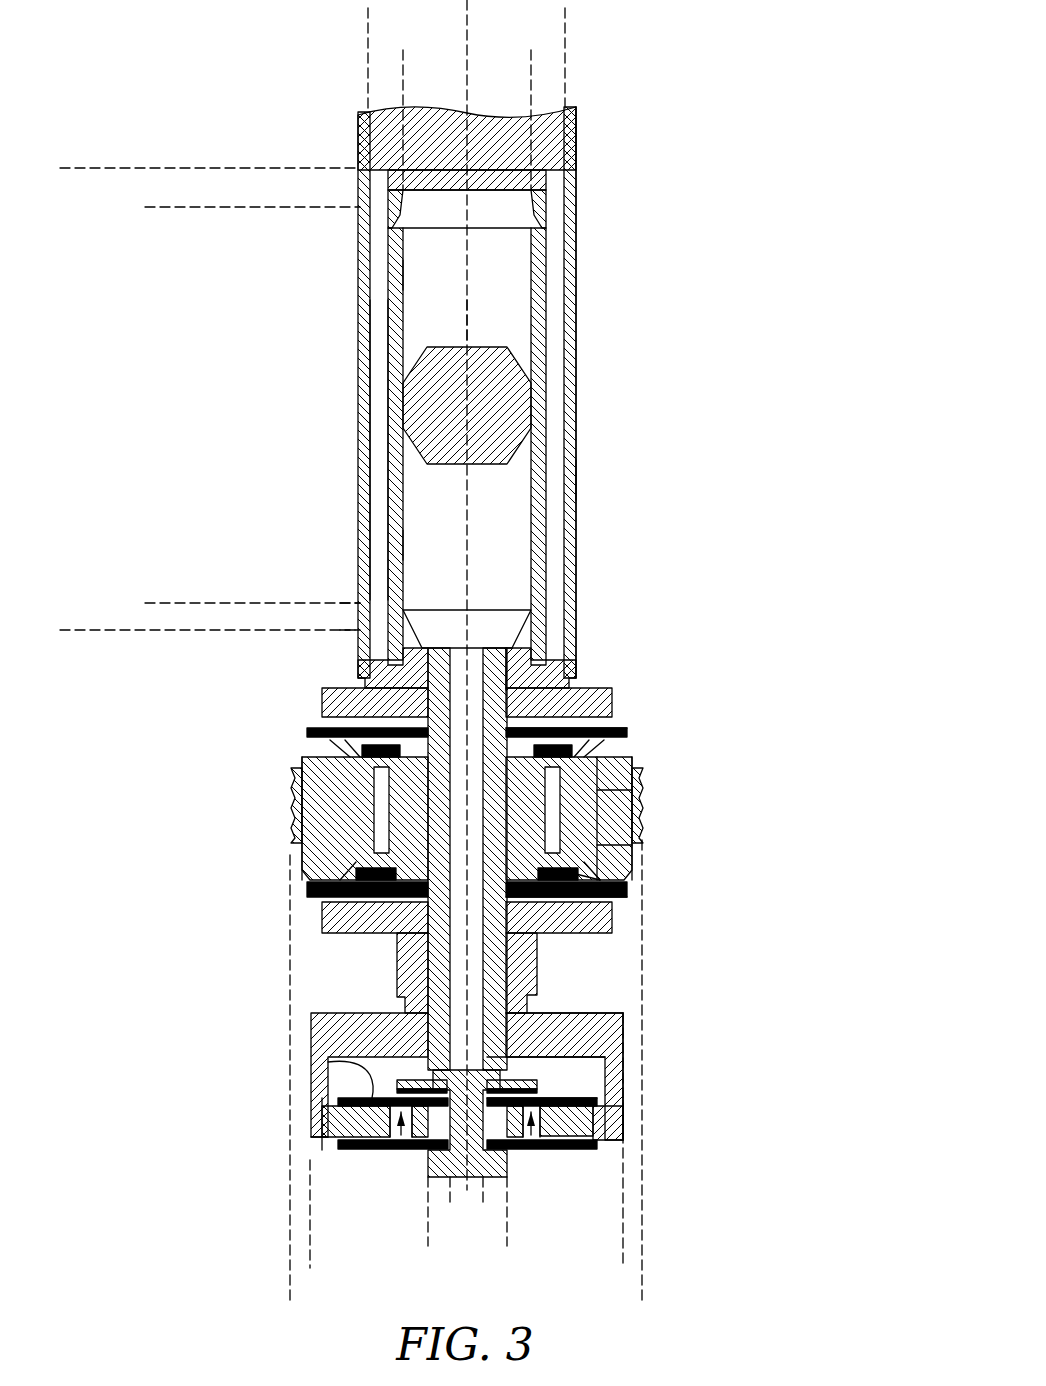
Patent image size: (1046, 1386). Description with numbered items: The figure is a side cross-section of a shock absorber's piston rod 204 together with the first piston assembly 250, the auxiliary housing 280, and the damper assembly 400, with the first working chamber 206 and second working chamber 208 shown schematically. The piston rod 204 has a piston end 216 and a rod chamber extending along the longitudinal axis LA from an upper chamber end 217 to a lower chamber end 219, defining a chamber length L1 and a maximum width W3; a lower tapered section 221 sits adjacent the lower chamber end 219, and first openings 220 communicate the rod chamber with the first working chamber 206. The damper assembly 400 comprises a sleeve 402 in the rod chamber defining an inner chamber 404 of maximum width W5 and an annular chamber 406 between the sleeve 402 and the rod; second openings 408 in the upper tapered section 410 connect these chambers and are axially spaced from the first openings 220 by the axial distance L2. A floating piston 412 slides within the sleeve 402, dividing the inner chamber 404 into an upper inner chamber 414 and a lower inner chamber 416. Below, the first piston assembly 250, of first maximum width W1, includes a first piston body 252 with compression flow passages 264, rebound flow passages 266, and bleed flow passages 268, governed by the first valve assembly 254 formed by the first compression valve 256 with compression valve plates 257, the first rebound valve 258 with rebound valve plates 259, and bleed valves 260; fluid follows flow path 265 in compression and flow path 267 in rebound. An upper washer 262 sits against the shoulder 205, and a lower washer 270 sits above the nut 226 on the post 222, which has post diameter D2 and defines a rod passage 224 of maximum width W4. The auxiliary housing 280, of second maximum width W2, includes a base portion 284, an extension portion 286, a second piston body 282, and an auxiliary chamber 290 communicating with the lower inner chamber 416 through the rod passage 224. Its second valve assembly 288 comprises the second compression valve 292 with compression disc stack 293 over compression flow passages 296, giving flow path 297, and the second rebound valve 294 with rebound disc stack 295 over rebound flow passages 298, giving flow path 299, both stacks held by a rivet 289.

The upper chamber end 217 is at (577, 170).
The second opening 408 is at (393, 200).
The upper tapered section 410 is at (534, 208).
The sleeve 402 is at (546, 270).
The damper assembly 400 is at (577, 322).
The piston rod 204 is at (577, 560).
The first working chamber 206 is at (590, 462).
The floating piston 412 is at (508, 400).
The annular chamber 406 is at (380, 463).
The inner chamber 404 is at (434, 507).
The upper inner chamber 414 is at (427, 282).
The lower inner chamber 416 is at (422, 547).
The lower chamber end 219 is at (372, 628).
The lower tapered section 221 is at (565, 652).
The first opening 220 is at (366, 600).
The shoulder 205 is at (522, 682).
The rod passage 224 is at (458, 978).
The second piston body 282 is at (590, 1132).
The upper washer 262 is at (330, 690).
The flow path 265 is at (622, 712).
The compression valve plates 257 is at (618, 730).
The first piston body 252 is at (302, 855).
The rebound flow passages 266 is at (318, 798).
The rebound valve plates 259 is at (612, 897).
The flow path 267 is at (235, 928).
The lower washer 270 is at (340, 930).
The first piston assembly 250 is at (272, 830).
The compression flow passages 264 is at (643, 800).
The bleed flow passages 268 is at (643, 827).
The first compression valve 256 is at (633, 733).
The bleed valves 260 is at (657, 905).
The first rebound valve 258 is at (633, 885).
The first valve assembly 254 is at (797, 782).
The nut 226 is at (397, 960).
The post 222 is at (537, 960).
The piston end 216 is at (311, 1030).
The base portion 284 is at (587, 1037).
The rivet 289 is at (545, 1013).
The second working chamber 208 is at (728, 1160).
The auxiliary housing 280 is at (630, 1117).
The extension portion 286 is at (313, 1068).
The compression disc stack 293 is at (333, 1100).
The auxiliary chamber 290 is at (572, 1070).
The second compression valve 292 is at (310, 1098).
The flow path 297 is at (605, 1088).
The second rebound valve 294 is at (333, 1150).
The second valve assembly 288 is at (155, 1090).
The rebound disc stack 295 is at (337, 1160).
The rebound flow passages 298 is at (342, 1212).
The compression flow passages 296 is at (533, 1135).
The flow path 299 is at (350, 1182).
The longitudinal axis LA is at (467, 318).
The chamber length L1 is at (86, 168).
The axial distance L2 is at (169, 207).
The first maximum width W1 is at (290, 1295).
The second maximum width W2 is at (623, 1258).
The maximum width W3 is at (368, 31).
The maximum width W4 is at (483, 1195).
The maximum width W5 is at (403, 78).
The post diameter D2 is at (428, 1238).